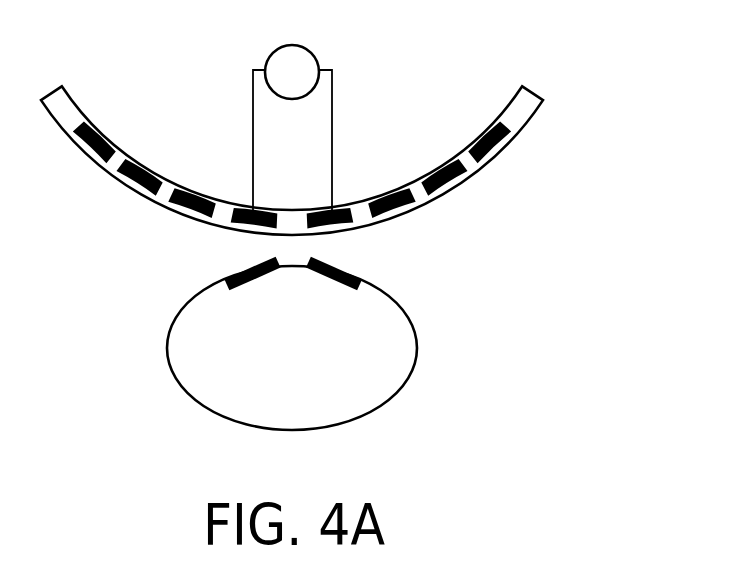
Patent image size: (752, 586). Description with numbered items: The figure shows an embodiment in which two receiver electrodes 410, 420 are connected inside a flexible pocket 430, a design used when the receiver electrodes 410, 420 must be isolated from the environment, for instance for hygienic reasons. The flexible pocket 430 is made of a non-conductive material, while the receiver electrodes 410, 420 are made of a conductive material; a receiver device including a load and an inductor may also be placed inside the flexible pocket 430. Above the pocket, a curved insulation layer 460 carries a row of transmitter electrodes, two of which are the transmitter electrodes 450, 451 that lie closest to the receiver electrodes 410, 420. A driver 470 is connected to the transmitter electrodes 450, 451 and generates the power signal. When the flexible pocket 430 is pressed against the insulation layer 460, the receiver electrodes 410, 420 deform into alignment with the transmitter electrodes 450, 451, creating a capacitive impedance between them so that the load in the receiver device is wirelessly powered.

The receiver electrode 410 is at (352, 272).
The receiver electrode 420 is at (234, 272).
The flexible pocket 430 is at (268, 396).
The transmitter electrode 450 is at (343, 209).
The transmitter electrode 451 is at (245, 210).
The insulation layer 460 is at (535, 120).
The driver 470 is at (312, 52).